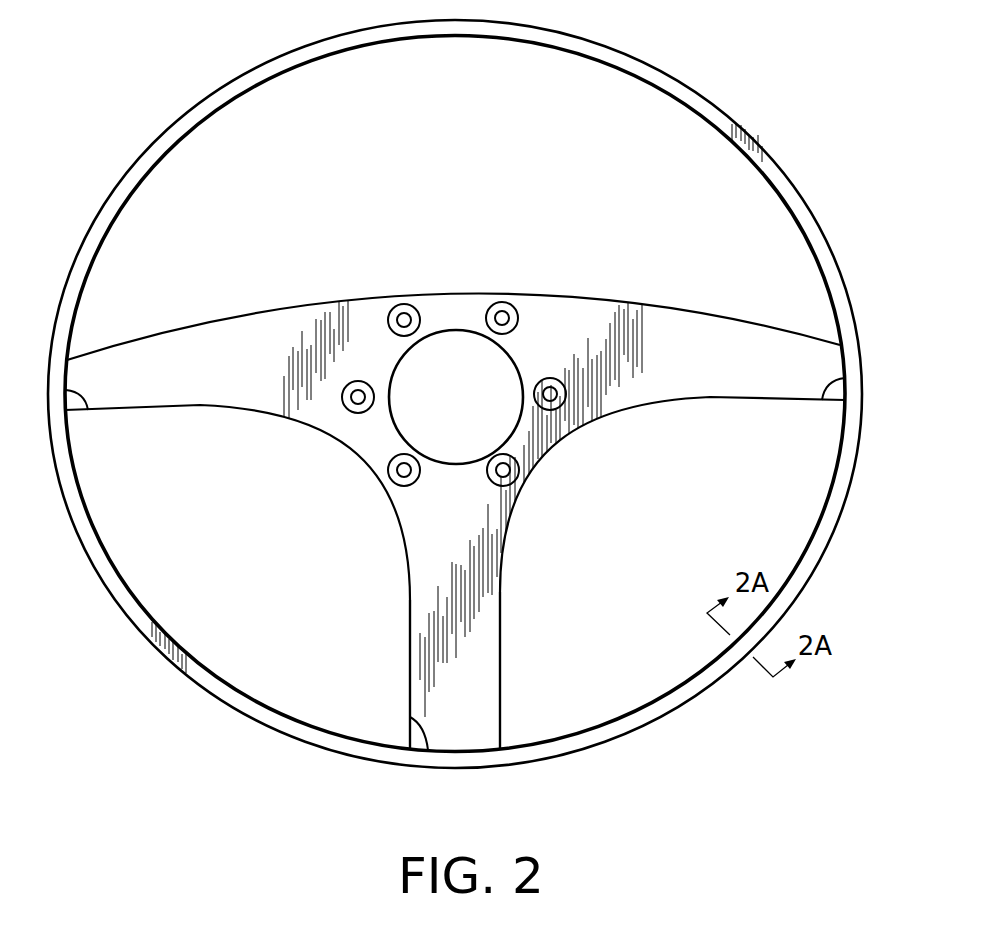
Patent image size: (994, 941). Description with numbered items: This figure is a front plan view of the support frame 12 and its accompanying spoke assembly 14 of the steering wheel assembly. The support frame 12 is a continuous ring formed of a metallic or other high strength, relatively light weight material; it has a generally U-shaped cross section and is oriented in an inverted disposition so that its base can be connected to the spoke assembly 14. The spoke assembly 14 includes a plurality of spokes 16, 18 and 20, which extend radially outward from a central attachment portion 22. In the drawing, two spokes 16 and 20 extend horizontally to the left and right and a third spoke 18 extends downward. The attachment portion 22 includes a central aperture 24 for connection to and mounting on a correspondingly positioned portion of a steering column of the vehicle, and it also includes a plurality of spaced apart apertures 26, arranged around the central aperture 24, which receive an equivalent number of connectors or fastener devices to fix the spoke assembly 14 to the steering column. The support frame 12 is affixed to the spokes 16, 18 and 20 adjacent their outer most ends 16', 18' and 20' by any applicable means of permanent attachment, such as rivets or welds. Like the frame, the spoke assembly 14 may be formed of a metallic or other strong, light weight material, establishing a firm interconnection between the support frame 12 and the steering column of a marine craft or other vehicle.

The support frame 12 is at (707, 100).
The spoke assembly 14 is at (463, 276).
The spoke 16 is at (237, 564).
The outer most end of spoke 16' is at (113, 440).
The spoke 18 is at (519, 671).
The outer most end of spoke 18' is at (390, 693).
The spoke 20 is at (672, 565).
The outer most end of spoke 20' is at (797, 429).
The attachment portion 22 is at (550, 321).
The central aperture 24 is at (397, 350).
The spaced apart apertures 26 is at (405, 303).